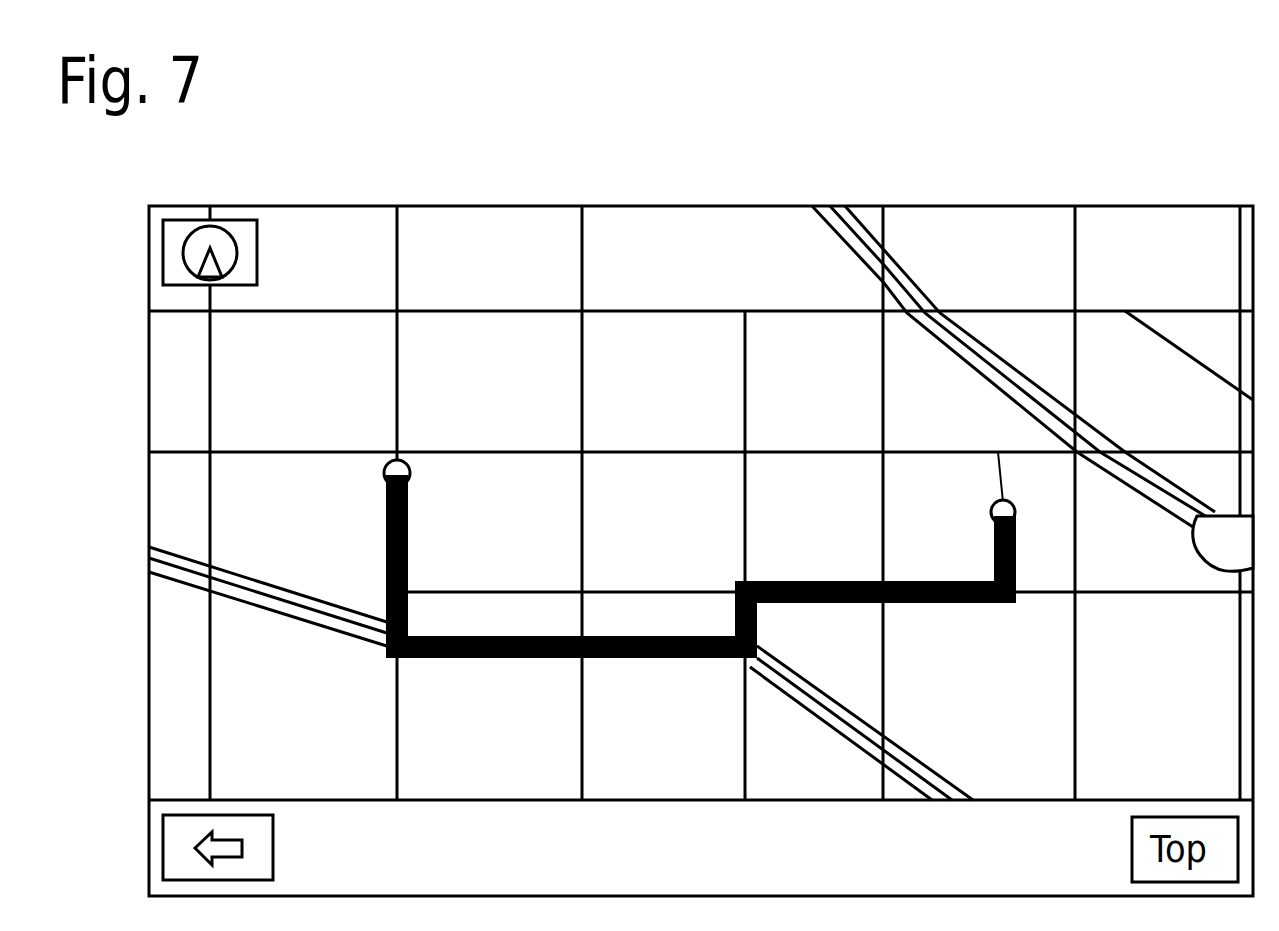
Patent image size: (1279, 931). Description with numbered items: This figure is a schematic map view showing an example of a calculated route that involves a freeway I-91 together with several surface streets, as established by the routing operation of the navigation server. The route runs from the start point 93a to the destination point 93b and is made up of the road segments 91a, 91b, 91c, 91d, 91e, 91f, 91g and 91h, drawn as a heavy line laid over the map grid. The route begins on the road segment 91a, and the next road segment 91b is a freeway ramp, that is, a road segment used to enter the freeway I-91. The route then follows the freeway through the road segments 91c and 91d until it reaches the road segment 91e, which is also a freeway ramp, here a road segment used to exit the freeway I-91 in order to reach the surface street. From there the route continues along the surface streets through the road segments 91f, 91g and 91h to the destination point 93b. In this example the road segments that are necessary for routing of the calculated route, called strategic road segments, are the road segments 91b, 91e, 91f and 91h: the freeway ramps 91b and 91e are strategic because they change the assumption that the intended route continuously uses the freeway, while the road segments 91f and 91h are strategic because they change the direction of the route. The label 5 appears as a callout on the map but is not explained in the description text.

The display screen callout 5 is at (1223, 543).
The freeway I- 91 is at (699, 594).
The road segment 91a is at (378, 475).
The road segment 91b is at (411, 593).
The road segment 91c is at (582, 661).
The road segment 91d is at (743, 661).
The road segment 91e is at (734, 577).
The road segment 91f is at (882, 583).
The road segment 91g is at (1017, 604).
The road segment 91h is at (1020, 520).
The start point 93a is at (398, 461).
The destination point 93b is at (995, 504).